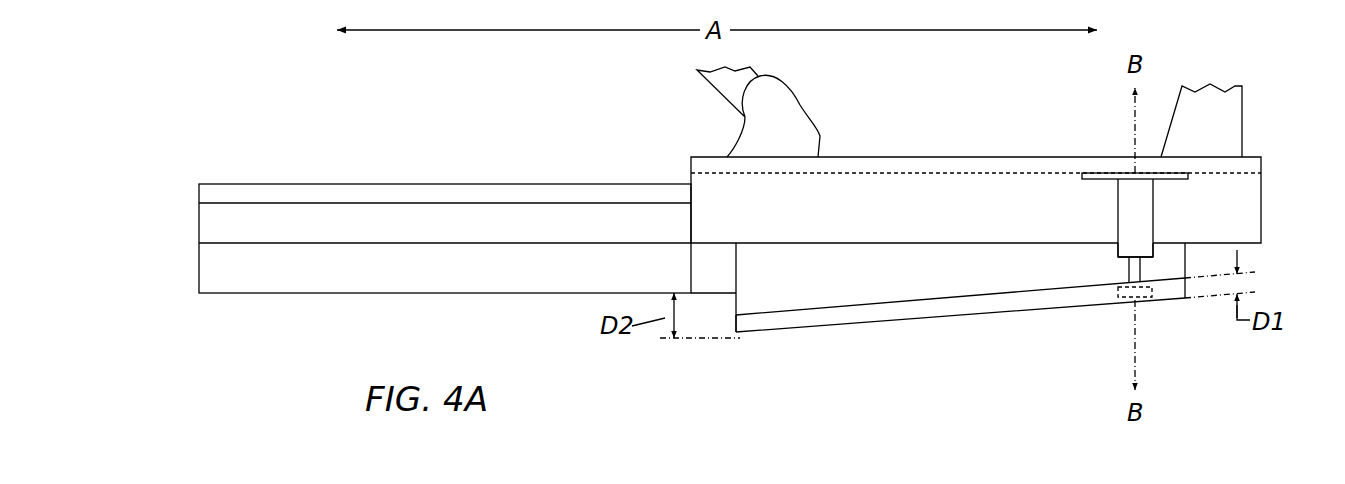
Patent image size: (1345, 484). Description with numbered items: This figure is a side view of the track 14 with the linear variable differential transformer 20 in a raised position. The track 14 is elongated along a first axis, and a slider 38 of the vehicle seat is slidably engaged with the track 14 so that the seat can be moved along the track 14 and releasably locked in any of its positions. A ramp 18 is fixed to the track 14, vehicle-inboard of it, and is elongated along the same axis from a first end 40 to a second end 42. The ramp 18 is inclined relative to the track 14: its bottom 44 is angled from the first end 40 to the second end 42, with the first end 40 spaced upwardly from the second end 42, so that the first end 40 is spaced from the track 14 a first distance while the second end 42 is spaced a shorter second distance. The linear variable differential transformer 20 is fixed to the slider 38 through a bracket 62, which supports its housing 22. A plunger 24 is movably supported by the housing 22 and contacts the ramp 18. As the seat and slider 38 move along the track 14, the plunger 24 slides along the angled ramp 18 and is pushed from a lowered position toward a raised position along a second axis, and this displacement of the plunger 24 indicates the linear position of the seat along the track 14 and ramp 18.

The track 14 is at (216, 273).
The ramp 18 is at (775, 263).
The linear variable differential transformer 20 is at (1161, 208).
The housing 22 is at (1138, 230).
The plunger 24 is at (1137, 270).
The slider 38 is at (912, 168).
The first end 40 is at (1187, 288).
The second end 42 is at (740, 318).
The bottom 44 is at (972, 318).
The bracket 62 is at (1125, 173).